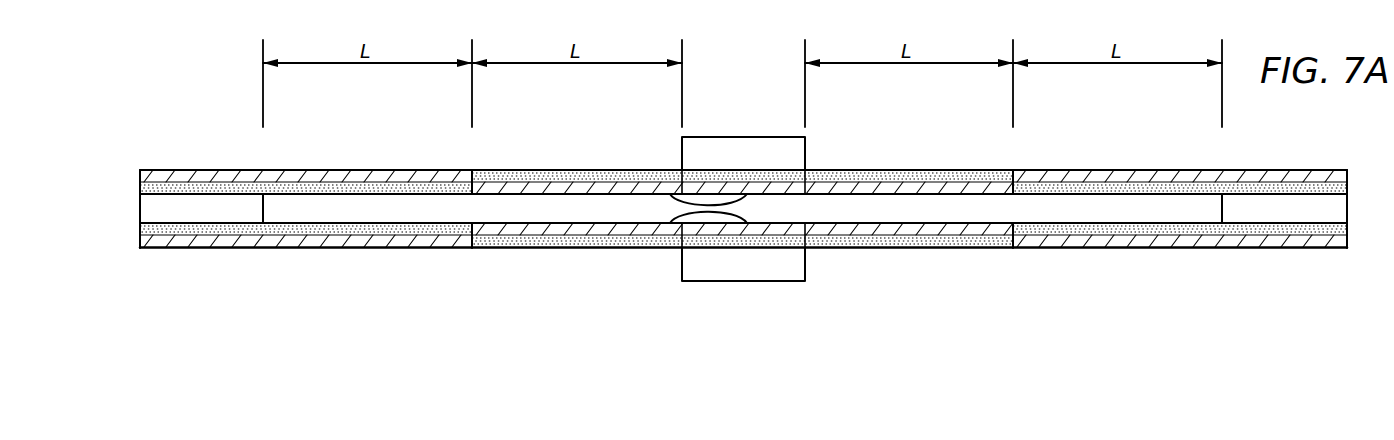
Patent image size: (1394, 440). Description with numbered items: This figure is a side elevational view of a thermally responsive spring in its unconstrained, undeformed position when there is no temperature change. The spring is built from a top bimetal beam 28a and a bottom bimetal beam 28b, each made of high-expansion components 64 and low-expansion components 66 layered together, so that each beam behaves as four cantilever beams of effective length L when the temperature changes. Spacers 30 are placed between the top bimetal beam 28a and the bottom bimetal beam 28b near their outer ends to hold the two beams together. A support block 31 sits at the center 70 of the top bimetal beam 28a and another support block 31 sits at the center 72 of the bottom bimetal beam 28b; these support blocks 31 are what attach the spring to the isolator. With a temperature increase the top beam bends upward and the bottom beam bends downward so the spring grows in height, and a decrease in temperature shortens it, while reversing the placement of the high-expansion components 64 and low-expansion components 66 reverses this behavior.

The top bimetal beam 28a is at (140, 178).
The bottom bimetal beam 28b is at (140, 240).
The spacers 30 is at (140, 222).
The support block 31 is at (748, 137).
The high-expansion components 64 is at (290, 230).
The low-expansion components 66 is at (392, 173).
The center of the top bimetal beam 70 is at (672, 194).
The center of the bottom bimetal beam 72 is at (672, 223).